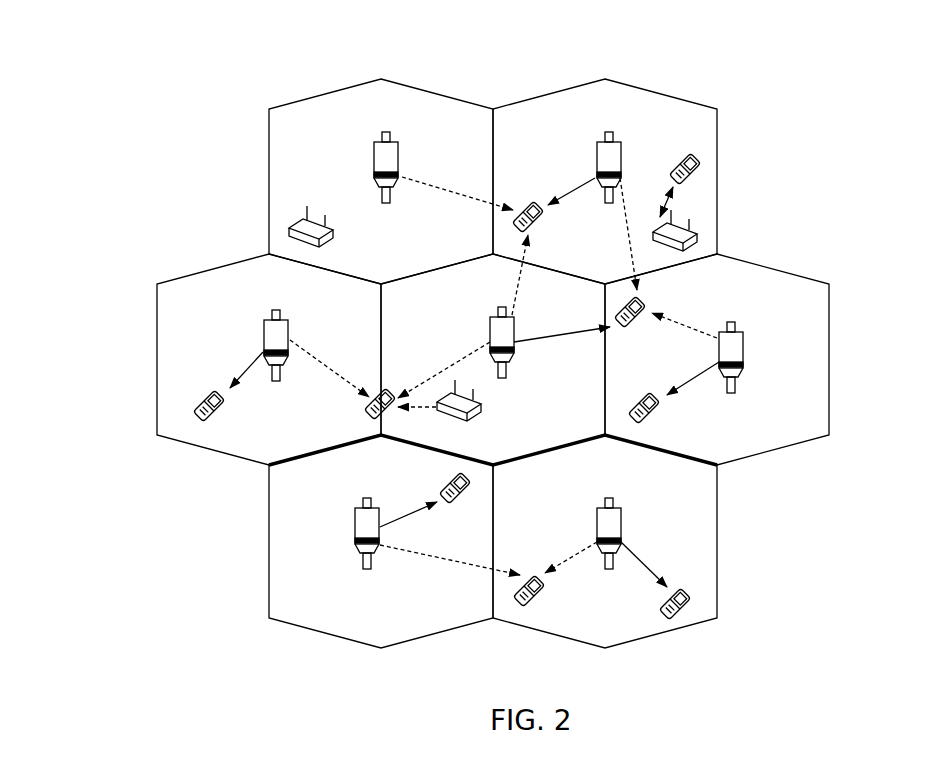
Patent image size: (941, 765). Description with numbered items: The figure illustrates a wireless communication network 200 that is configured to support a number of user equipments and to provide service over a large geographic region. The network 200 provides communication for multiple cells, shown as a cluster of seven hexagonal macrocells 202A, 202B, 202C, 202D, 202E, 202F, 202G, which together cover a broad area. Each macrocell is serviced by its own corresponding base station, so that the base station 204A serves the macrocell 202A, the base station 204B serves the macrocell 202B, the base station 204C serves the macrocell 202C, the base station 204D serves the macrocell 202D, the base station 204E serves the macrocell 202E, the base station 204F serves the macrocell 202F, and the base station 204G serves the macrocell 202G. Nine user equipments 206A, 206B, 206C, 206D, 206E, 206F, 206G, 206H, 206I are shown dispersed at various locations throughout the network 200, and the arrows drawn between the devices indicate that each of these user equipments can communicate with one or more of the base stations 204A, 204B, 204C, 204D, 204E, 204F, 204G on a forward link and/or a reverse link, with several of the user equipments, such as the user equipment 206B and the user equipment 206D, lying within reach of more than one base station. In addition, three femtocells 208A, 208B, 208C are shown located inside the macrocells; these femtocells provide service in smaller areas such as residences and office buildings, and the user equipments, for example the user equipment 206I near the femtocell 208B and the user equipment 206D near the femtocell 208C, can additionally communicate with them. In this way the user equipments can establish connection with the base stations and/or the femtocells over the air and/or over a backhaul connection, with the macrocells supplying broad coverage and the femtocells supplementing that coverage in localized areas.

The wireless communication network 200 is at (828, 65).
The macrocell 202A is at (337, 90).
The macrocell 202B is at (604, 80).
The macrocell 202C is at (157, 358).
The macrocell 202D is at (493, 359).
The macrocell 202E is at (829, 357).
The macrocell 202F is at (269, 540).
The macrocell 202G is at (717, 543).
The base station 204A is at (386, 132).
The base station 204B is at (609, 132).
The base station 204C is at (276, 311).
The base station 204D is at (502, 308).
The base station 204E is at (731, 322).
The base station 204F is at (367, 498).
The base station 204G is at (608, 498).
The UE 206A is at (677, 618).
The UE 206B is at (538, 228).
The UE 206C is at (198, 420).
The UE 206D is at (373, 417).
The UE 206E is at (643, 307).
The UE 206F is at (450, 483).
The UE 206G is at (537, 600).
The UE 206H is at (660, 410).
The UE 206I is at (680, 158).
The femtocell 208A is at (332, 243).
The femtocell 208B is at (677, 237).
The femtocell 208C is at (470, 417).